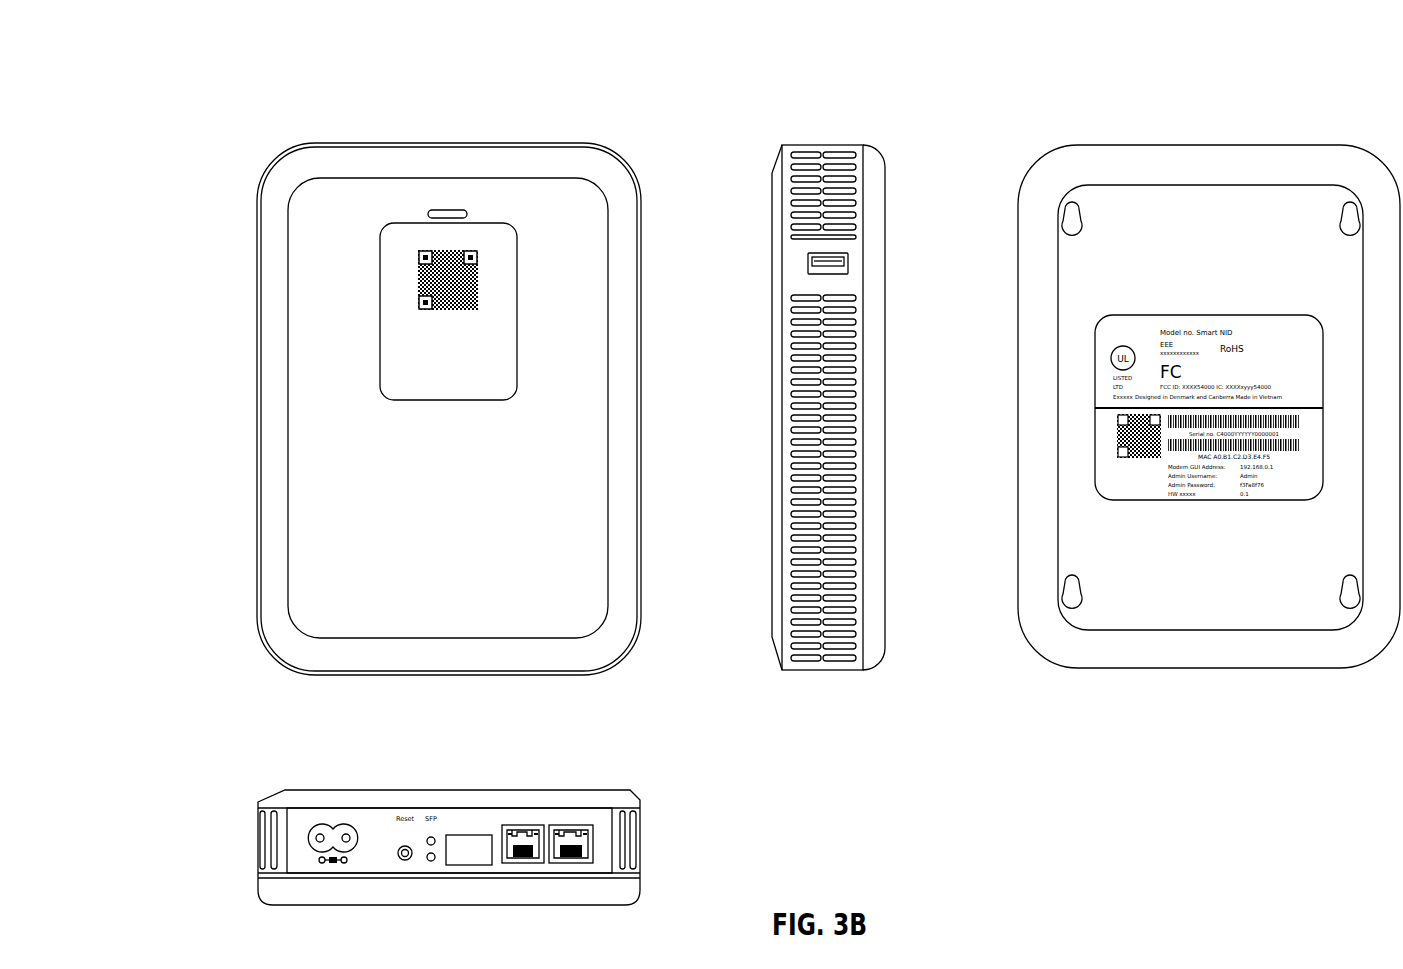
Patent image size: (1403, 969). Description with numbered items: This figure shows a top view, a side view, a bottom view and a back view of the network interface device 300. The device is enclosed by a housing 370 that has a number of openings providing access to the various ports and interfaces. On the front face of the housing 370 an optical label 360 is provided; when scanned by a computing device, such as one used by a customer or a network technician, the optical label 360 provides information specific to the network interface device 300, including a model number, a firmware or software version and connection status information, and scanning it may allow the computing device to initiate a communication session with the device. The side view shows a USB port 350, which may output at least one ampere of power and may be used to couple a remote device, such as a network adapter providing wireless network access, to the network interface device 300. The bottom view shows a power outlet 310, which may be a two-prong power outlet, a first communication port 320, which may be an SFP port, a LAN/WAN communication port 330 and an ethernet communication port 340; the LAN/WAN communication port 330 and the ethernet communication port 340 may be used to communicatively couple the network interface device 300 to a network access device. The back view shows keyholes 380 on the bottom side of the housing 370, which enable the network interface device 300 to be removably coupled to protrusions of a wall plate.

The network interface device 300 is at (252, 106).
The power outlet 310 is at (315, 838).
The first communication port 320 is at (458, 835).
The LAN/WAN communication port 330 is at (525, 828).
The ethernet communication port 340 is at (593, 826).
The USB port 350 is at (808, 262).
The optical label 360 is at (470, 283).
The housing 370 is at (360, 143).
The keyholes 380 is at (1068, 229).